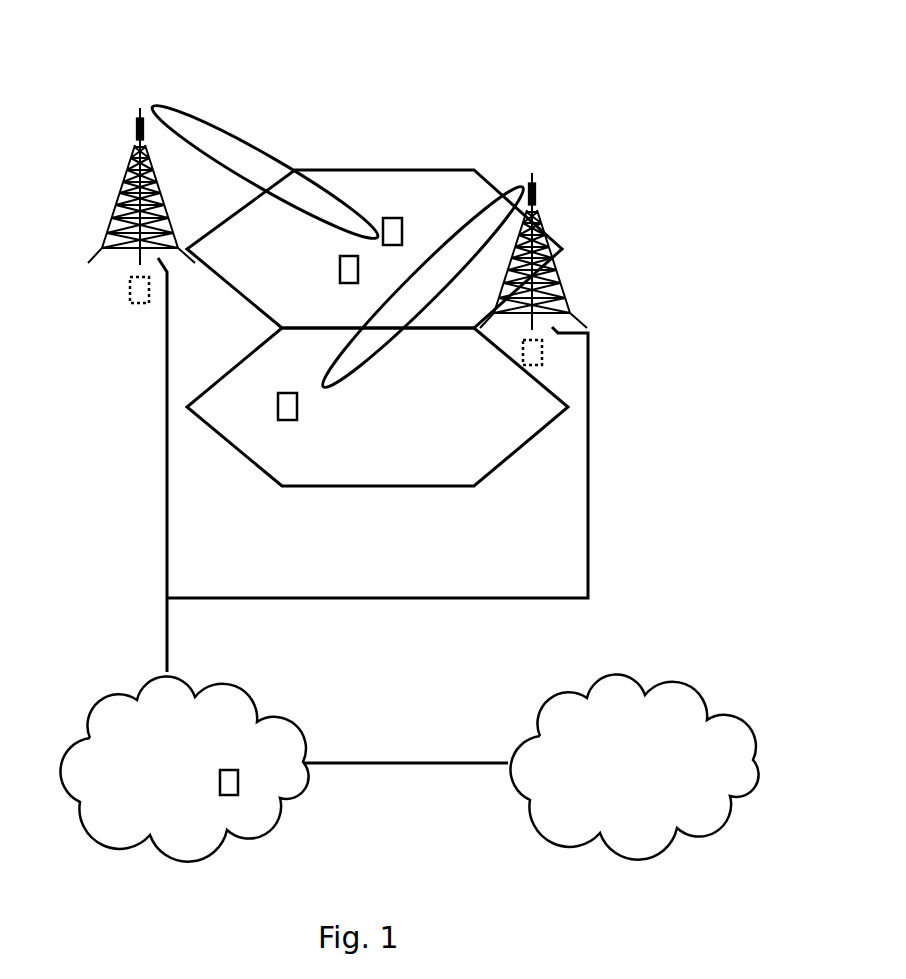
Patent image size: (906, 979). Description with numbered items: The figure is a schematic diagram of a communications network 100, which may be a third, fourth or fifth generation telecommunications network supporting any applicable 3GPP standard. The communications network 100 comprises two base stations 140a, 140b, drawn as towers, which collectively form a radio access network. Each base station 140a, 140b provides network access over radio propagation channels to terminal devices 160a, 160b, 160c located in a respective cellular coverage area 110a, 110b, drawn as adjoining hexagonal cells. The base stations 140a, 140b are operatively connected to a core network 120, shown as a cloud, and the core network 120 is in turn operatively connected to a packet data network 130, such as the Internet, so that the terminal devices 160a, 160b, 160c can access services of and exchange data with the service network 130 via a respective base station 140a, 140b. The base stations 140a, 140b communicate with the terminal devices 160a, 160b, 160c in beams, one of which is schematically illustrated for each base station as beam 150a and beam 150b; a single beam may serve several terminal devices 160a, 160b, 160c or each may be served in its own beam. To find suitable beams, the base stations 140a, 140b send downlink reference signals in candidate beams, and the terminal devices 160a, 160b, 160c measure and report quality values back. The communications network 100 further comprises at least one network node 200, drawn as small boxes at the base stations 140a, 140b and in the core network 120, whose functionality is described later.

The communications network 100 is at (688, 69).
The cellular coverage area 110a is at (383, 170).
The cellular coverage area 110b is at (335, 488).
The core network 120 is at (178, 760).
The packet data network 130 is at (663, 782).
The base station 140a is at (136, 135).
The base station 140b is at (542, 192).
The beam 150a is at (222, 137).
The beam 150b is at (387, 345).
The terminal device 160a is at (340, 278).
The terminal device 160b is at (442, 215).
The terminal device 160c is at (337, 418).
The network node 200 is at (128, 292).